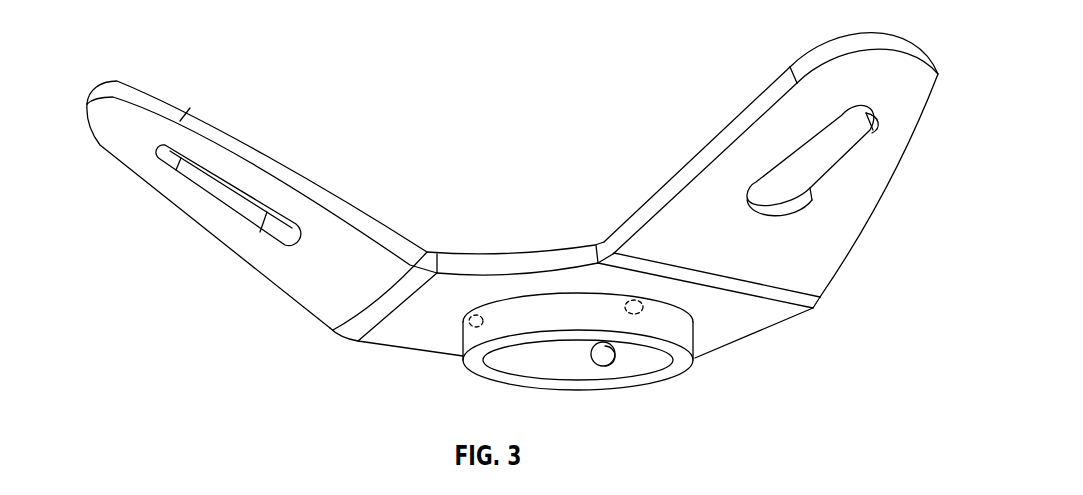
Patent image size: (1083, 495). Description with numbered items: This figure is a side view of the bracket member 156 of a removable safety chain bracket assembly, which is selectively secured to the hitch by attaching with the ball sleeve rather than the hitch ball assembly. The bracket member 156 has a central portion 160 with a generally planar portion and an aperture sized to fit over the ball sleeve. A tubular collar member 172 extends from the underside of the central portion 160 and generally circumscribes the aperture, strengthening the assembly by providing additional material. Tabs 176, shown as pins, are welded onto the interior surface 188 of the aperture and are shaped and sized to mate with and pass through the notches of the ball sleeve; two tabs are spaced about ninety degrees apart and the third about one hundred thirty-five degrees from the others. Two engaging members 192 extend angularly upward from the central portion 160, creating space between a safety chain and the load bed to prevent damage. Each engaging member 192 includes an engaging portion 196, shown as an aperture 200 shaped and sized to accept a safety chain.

The bracket member 156 is at (514, 245).
The central portion 160 is at (403, 337).
The tubular collar member 172 is at (462, 337).
The tab 176 is at (465, 314).
The interior surface 188 is at (550, 373).
The engaging member 192 is at (133, 152).
The engaging portion 196 is at (238, 185).
The aperture 200 is at (208, 200).